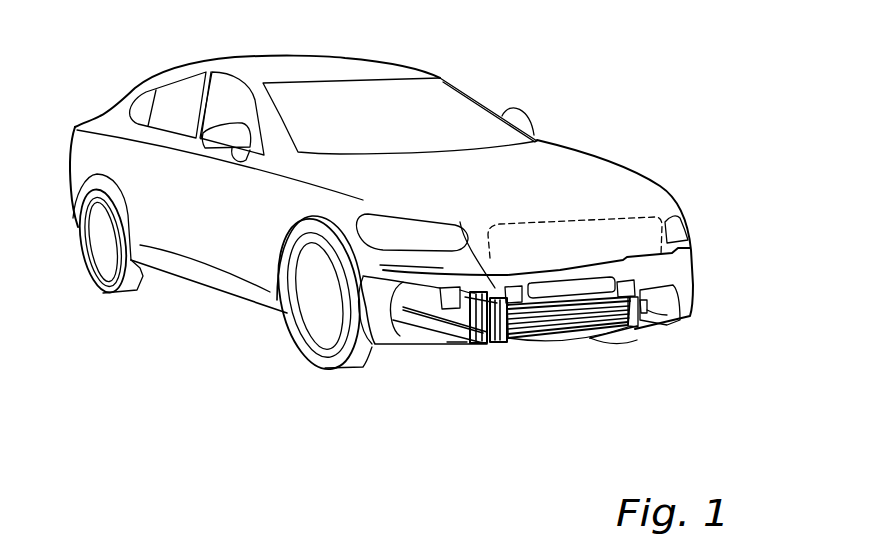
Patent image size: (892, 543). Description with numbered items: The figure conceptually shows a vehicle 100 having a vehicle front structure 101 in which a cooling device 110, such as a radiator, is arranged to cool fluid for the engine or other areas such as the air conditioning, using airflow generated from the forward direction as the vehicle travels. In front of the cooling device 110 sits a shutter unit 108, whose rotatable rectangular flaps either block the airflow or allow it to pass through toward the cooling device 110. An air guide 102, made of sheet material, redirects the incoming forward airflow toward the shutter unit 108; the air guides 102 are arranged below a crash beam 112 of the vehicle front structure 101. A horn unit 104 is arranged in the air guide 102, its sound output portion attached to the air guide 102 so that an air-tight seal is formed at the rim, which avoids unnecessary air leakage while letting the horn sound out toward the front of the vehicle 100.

The vehicle 100 is at (608, 58).
The vehicle front structure 101 is at (707, 211).
The air guide 102 is at (503, 340).
The horn unit 104 is at (678, 306).
The shutter unit 108 is at (637, 326).
The cooling device 110 is at (475, 305).
The crash beam 112 is at (460, 222).